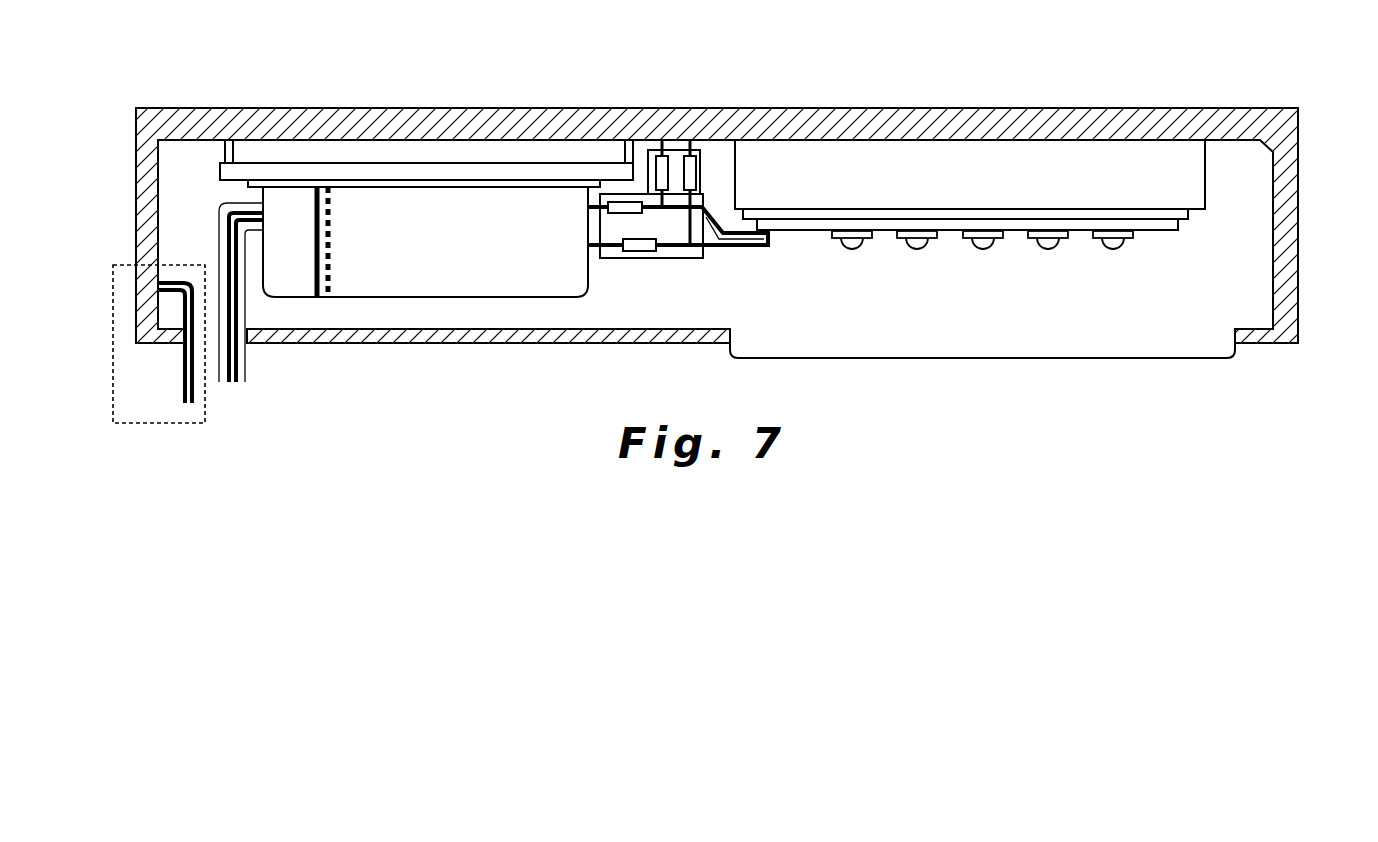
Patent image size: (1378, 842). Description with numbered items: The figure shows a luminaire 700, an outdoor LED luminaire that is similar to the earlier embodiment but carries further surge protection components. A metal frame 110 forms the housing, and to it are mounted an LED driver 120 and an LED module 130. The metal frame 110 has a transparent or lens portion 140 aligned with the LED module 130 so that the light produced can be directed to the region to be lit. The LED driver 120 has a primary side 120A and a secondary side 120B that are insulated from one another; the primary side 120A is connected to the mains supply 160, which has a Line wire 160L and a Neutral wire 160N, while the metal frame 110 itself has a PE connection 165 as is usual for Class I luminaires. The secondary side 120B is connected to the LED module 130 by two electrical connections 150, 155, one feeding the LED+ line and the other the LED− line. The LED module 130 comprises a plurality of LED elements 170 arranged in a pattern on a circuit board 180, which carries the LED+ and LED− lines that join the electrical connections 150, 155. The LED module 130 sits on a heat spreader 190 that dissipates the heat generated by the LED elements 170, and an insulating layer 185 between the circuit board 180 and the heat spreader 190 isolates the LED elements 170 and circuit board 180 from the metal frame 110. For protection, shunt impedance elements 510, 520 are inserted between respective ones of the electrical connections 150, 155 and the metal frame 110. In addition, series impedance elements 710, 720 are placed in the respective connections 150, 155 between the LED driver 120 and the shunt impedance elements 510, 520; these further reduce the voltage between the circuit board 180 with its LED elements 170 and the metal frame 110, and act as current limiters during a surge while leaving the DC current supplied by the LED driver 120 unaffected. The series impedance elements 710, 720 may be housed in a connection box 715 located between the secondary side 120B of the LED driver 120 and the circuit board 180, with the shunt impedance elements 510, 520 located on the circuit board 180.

The luminaire 700 is at (1290, 93).
The metal frame 110 is at (1022, 130).
The LED driver 120 is at (411, 174).
The primary side 120A is at (293, 227).
The secondary side 120B is at (452, 242).
The LED module 130 is at (1048, 270).
The lens portion 140 is at (1152, 343).
The electrical connection 150 is at (706, 208).
The electrical connection 155 is at (715, 248).
The mains supply 160 is at (209, 246).
The Line wire 160L is at (225, 208).
The Neutral wire 160N is at (238, 365).
The PE connection 165 is at (157, 427).
The LED elements 170 is at (1133, 252).
The circuit board 180 is at (1178, 227).
The insulating layer 185 is at (1190, 215).
The heat spreader 190 is at (970, 174).
The shunt impedance element 510 is at (661, 170).
The shunt impedance element 520 is at (689, 170).
The series impedance element 710 is at (620, 207).
The connection box 715 is at (703, 206).
The series impedance element 720 is at (640, 245).